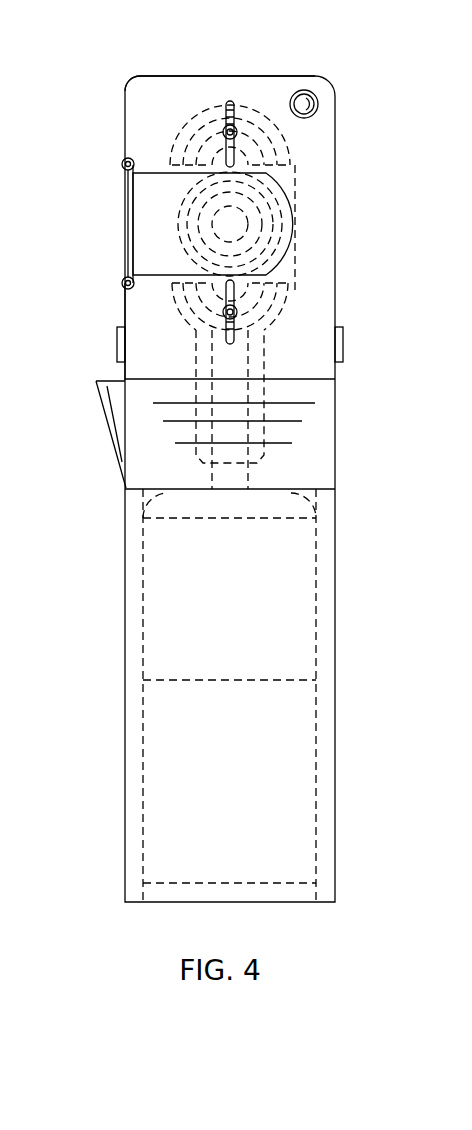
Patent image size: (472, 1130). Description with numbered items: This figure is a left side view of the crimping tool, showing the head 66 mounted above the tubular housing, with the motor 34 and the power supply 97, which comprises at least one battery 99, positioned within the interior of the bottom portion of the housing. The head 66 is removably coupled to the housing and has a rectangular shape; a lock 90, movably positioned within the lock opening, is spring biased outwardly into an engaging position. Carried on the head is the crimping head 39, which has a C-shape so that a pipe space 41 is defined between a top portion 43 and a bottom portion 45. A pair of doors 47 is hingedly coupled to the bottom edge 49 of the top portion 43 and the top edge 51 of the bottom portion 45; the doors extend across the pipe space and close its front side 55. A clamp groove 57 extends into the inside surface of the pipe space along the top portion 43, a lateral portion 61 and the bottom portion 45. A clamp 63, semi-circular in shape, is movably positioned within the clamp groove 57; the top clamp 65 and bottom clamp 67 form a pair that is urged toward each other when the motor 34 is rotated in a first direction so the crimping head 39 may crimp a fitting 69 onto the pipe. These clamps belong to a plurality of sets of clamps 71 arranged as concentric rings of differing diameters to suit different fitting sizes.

The motor 34 is at (145, 605).
The crimping head 39 is at (150, 76).
The pipe space 41 is at (165, 222).
The top portion 43 is at (119, 133).
The bottom portion 45 is at (122, 310).
The pair of doors 47 is at (127, 228).
The bottom edge 49 is at (135, 177).
The top edge 51 is at (127, 269).
The front side 55 is at (143, 207).
The clamp groove 57 is at (273, 117).
The lateral portion 61 is at (340, 213).
The clamp 63 is at (289, 128).
The top clamp 65 is at (303, 155).
The head 66 is at (343, 100).
The bottom clamp 67 is at (284, 328).
The fitting 69 is at (265, 247).
The plurality of sets of clamps 71 is at (208, 128).
The lock 90 is at (116, 338).
The power supply 97 is at (143, 760).
The battery 99 is at (288, 749).